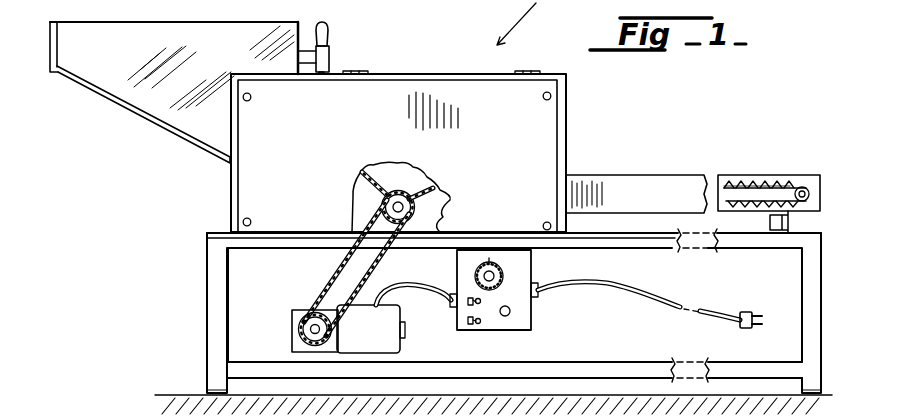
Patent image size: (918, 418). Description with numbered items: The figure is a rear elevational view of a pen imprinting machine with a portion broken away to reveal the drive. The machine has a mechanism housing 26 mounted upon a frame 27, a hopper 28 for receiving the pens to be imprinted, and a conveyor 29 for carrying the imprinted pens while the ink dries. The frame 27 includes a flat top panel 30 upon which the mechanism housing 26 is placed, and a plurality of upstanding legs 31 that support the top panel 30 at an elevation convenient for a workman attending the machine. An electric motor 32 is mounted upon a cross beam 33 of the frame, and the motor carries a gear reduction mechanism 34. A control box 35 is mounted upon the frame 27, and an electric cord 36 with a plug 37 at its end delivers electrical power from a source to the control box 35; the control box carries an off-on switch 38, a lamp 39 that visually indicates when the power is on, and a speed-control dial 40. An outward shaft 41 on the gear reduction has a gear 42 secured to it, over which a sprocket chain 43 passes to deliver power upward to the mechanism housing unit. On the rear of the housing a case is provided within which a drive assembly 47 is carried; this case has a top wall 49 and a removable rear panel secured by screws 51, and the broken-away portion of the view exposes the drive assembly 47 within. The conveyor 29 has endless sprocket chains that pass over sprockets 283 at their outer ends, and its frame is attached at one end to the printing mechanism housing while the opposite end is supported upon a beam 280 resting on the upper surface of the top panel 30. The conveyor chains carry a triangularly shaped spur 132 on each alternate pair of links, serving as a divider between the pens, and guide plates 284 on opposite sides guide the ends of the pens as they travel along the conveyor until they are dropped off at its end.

The mechanism housing 26 is at (583, 131).
The frame 27 is at (189, 292).
The hopper 28 is at (140, 137).
The conveyor 29 is at (702, 155).
The top panel 30 is at (217, 230).
The legs 31 is at (207, 320).
The electric motor 32 is at (387, 342).
The cross beam 33 is at (497, 361).
The gear reduction mechanism 34 is at (292, 322).
The control box 35 is at (548, 320).
The electric cord 36 is at (658, 297).
The plug 37 is at (748, 310).
The off-on switch 38 is at (482, 332).
The lamp 39 is at (511, 310).
The speed-control dial 40 is at (507, 275).
The outward shaft 41 is at (313, 318).
The gear 42 is at (322, 322).
The sprocket chain 43 is at (387, 267).
The drive assembly 47 is at (457, 201).
The top wall 49 is at (410, 77).
The screws 51 is at (251, 99).
The triangularly shaped spur 132 is at (740, 182).
The beam 280 is at (790, 226).
The sprockets 283 is at (778, 182).
The guide plates 284 is at (635, 182).